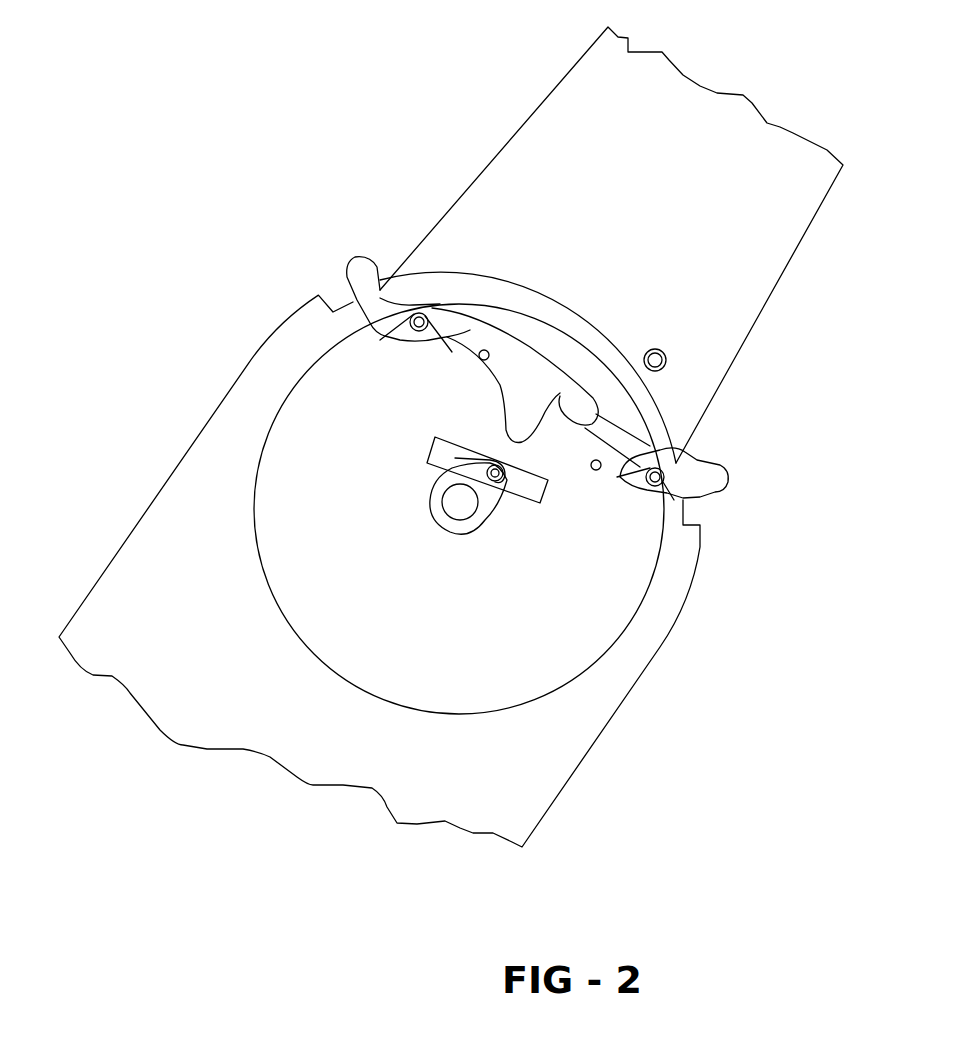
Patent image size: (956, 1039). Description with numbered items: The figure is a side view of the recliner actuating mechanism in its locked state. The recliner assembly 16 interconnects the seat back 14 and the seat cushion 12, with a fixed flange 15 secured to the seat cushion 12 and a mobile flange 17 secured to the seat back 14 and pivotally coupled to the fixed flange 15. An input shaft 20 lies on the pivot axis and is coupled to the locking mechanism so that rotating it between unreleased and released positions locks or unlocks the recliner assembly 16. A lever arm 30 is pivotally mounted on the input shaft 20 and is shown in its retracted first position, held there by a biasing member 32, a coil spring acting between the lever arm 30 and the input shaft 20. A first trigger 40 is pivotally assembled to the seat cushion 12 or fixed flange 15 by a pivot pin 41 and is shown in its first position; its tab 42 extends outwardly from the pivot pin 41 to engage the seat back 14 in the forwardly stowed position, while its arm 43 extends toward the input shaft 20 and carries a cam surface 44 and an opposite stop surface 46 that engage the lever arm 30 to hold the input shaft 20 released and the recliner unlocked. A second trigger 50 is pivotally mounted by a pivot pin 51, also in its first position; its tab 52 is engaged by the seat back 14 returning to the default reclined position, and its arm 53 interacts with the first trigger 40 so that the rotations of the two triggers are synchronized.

The seat cushion 12 is at (379, 571).
The fixed flange 15 is at (178, 488).
The seat back 14 is at (611, 242).
The mobile flange 17 is at (538, 108).
The recliner assembly 16 is at (585, 672).
The input shaft 20 is at (460, 505).
The lever arm 30 is at (445, 489).
The biasing member 32 is at (500, 482).
The first trigger 40 is at (411, 335).
The pivot pin 41 is at (443, 305).
The tab 42 is at (372, 263).
The arm 43 is at (545, 391).
The cam surface 44 is at (500, 418).
The stop surface 46 is at (540, 445).
The second trigger 50 is at (705, 462).
The pivot pin 51 is at (668, 470).
The tab 52 is at (725, 470).
The arm 53 is at (585, 440).